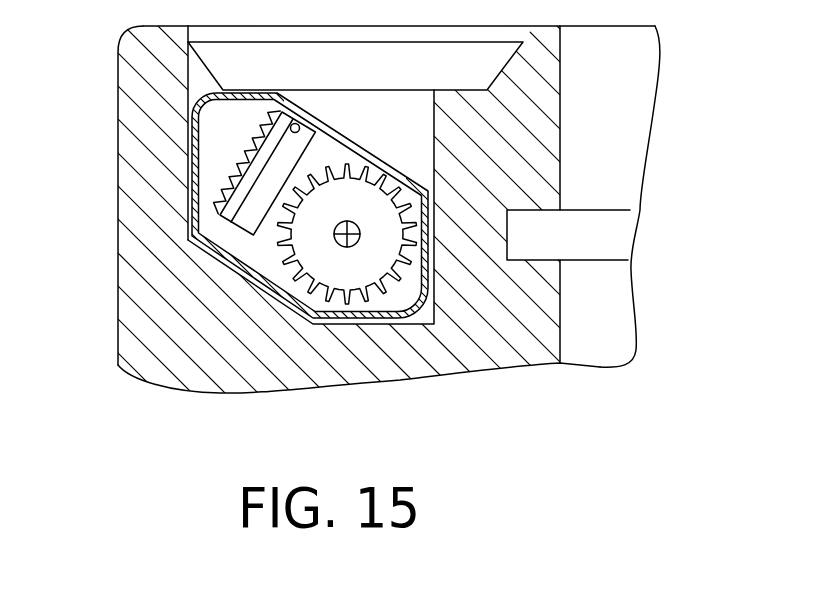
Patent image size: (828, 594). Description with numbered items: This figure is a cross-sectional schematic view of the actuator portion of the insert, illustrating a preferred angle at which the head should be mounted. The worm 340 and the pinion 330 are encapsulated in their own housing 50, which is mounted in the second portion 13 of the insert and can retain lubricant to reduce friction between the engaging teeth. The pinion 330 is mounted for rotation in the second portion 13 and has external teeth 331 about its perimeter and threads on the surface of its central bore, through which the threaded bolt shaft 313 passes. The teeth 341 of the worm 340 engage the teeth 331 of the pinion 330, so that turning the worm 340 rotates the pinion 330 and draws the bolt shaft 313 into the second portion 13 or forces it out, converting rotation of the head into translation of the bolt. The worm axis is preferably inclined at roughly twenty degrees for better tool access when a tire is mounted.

The second portion 13 is at (139, 204).
The housing 50 is at (122, 80).
The bolt shaft 313 is at (358, 224).
The pinion 330 is at (480, 276).
The pinion teeth 331 is at (302, 272).
The worm 340 is at (218, 212).
The worm teeth 341 is at (235, 167).